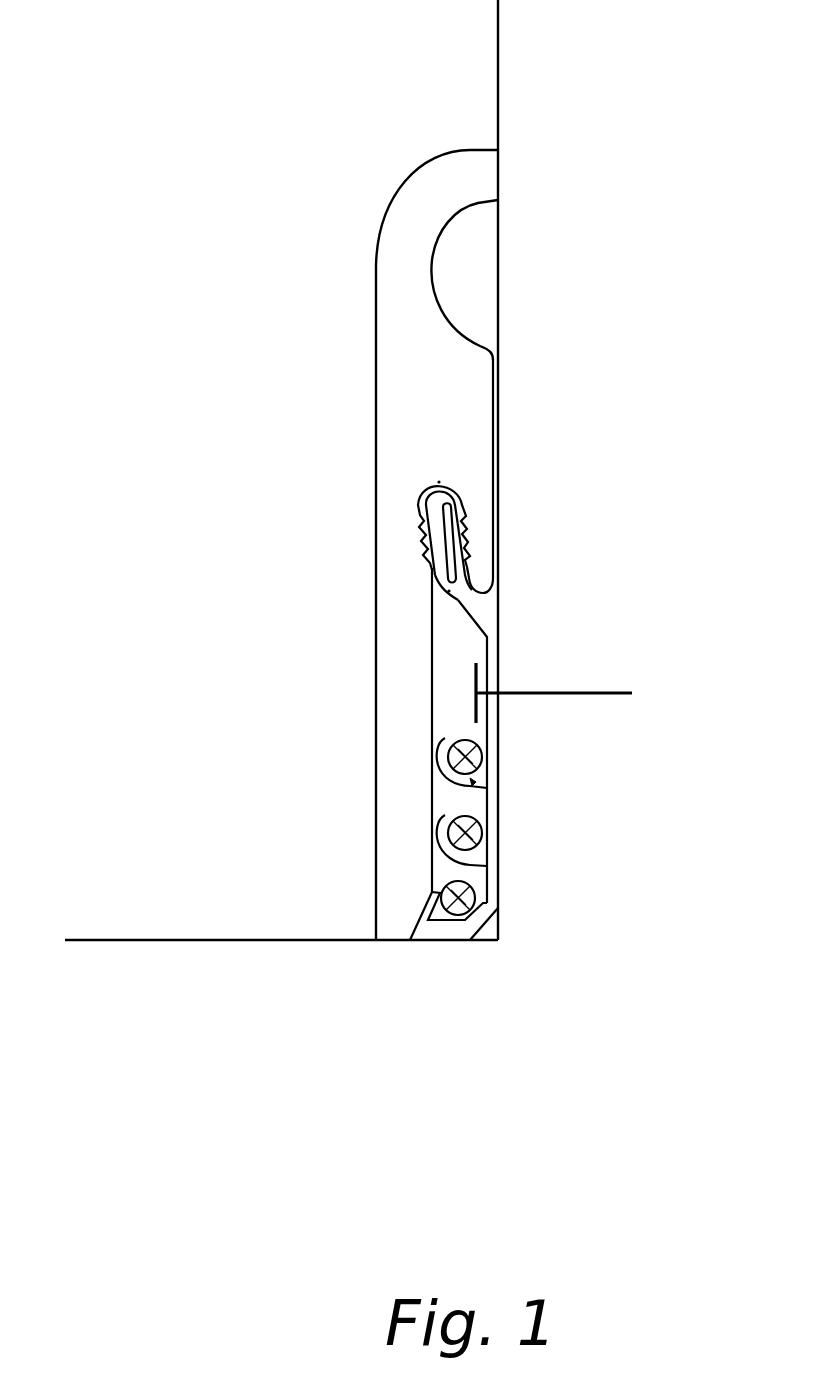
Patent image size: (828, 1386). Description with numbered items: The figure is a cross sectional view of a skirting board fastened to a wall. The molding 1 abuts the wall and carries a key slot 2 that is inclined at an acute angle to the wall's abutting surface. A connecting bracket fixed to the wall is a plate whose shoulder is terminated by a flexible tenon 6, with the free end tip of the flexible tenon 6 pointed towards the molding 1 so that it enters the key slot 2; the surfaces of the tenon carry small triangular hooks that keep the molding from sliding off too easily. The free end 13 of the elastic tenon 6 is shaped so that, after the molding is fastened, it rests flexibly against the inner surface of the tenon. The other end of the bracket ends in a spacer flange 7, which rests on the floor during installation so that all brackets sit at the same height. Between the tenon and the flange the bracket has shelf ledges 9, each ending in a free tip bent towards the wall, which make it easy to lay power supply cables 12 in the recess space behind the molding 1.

The molding 1 is at (410, 253).
The key slot 2 is at (445, 478).
The flexible tenon 6 is at (430, 525).
The spacer flange 7 is at (470, 940).
The shelf ledges 9 is at (477, 782).
The power supply cables 12 is at (478, 900).
The free end 13 is at (465, 594).